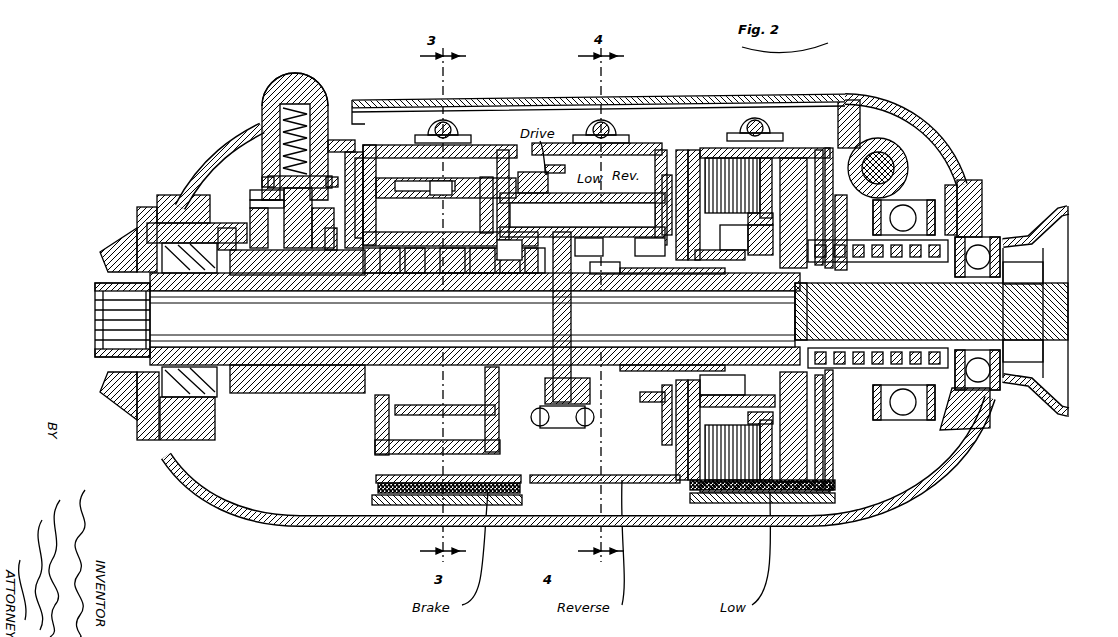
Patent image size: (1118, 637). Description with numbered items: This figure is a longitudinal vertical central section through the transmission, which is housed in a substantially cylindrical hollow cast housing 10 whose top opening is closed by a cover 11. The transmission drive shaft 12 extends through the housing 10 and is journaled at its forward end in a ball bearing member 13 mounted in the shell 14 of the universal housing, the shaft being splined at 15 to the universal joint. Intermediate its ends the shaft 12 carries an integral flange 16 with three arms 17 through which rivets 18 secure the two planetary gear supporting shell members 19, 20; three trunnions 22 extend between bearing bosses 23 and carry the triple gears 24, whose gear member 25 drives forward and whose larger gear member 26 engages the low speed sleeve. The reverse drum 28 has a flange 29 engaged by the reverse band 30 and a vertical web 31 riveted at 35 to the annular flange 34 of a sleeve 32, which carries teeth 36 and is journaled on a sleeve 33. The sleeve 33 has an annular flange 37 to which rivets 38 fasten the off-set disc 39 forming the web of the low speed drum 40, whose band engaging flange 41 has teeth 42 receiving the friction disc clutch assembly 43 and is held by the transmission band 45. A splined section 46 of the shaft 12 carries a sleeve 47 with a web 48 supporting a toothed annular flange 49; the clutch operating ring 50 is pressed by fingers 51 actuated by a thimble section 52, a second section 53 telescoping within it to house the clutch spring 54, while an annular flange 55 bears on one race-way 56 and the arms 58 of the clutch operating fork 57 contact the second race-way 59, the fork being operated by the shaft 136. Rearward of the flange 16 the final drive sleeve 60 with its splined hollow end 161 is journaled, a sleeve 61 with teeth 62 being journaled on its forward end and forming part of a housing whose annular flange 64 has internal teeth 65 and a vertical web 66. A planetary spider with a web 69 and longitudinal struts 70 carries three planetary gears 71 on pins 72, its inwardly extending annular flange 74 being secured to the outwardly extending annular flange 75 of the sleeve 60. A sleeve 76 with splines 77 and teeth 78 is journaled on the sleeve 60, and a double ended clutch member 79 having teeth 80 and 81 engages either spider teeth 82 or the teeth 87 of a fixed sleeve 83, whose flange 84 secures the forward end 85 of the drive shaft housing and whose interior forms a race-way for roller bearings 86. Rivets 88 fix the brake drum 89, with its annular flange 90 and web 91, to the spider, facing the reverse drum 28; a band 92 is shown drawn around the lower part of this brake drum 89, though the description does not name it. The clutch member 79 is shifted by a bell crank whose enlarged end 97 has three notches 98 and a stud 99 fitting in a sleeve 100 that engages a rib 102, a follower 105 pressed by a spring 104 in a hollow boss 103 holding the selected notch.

The transmission housing 10 is at (895, 488).
The cover 11 is at (515, 98).
The transmission drive shaft 12 is at (609, 319).
The ball bearing member 13 is at (995, 238).
The shell 14 is at (1052, 212).
The splines 15 is at (1048, 276).
The flange 16 is at (571, 313).
The arms 17 is at (585, 404).
The rivets 18 is at (588, 426).
The planetary gear supporting shell member 19 is at (509, 250).
The planetary gear supporting shell member 20 is at (622, 414).
The trunnions 22 is at (582, 215).
The bearing bosses 23 is at (504, 185).
The triple gears 24 is at (543, 182).
The gear member 25 is at (557, 164).
The gear member 26 is at (589, 247).
The reverse drum 28 is at (686, 150).
The flange 29 is at (632, 150).
The reverse band 30 is at (630, 143).
The vertical web 31 is at (696, 152).
The sleeve 32 is at (720, 244).
The sleeve 33 is at (628, 291).
The annular flange 34 is at (664, 432).
The rivets 35 is at (660, 404).
The teeth 36 is at (604, 288).
The annular flange 37 is at (760, 237).
The rivets 38 is at (740, 383).
The off-set disc 39 is at (732, 237).
The low speed drum 40 is at (829, 155).
The band engaging flange 41 is at (706, 160).
The teeth 42 is at (770, 170).
The friction disc clutch assembly 43 is at (715, 497).
The transmission band 45 is at (818, 150).
The splined section 46 is at (792, 302).
The sleeve 47 is at (914, 372).
The web 48 is at (763, 410).
The annular flange 49 is at (763, 319).
The clutch operating ring 50 is at (770, 160).
The fingers 51 is at (798, 213).
The thimble section 52 is at (798, 349).
The thimble section 53 is at (928, 244).
The clutch spring 54 is at (917, 242).
The annular flange 55 is at (945, 197).
The race-way 56 is at (903, 206).
The clutch operating fork 57 is at (878, 164).
The arms 58 is at (850, 232).
The race-way 59 is at (886, 210).
The final drive sleeve 60 is at (362, 276).
The sleeve 61 is at (522, 276).
The teeth 62 is at (542, 276).
The annular flange 64 is at (408, 181).
The internal teeth 65 is at (440, 181).
The vertical web 66 is at (486, 184).
The web 69 is at (372, 452).
The longitudinal struts 70 is at (410, 412).
The planetary gears 71 is at (428, 276).
The pins 72 is at (450, 209).
The annular flange 74 is at (462, 276).
The annular flange 75 is at (488, 276).
The sleeve 76 is at (258, 276).
The splines 77 is at (330, 276).
The teeth 78 is at (410, 276).
The double ended clutch member 79 is at (262, 193).
The teeth 80 is at (311, 218).
The teeth 81 is at (260, 226).
The teeth 82 is at (330, 218).
The fixed sleeve 83 is at (190, 205).
The flange 84 is at (148, 207).
The forward end of drive shaft housing 85 is at (128, 398).
The roller bearings 86 is at (203, 422).
The teeth 87 is at (197, 222).
The rivets 88 is at (360, 445).
The brake drum 89 is at (477, 420).
The annular flange 90 is at (369, 196).
The web 91 is at (357, 178).
The brake band 92 is at (410, 500).
The enlarged end 97 is at (322, 165).
The notches 98 is at (272, 172).
The stud 99 is at (337, 181).
The sleeve 100 is at (268, 208).
The rib 102 is at (285, 405).
The hollow boss 103 is at (283, 122).
The spring 104 is at (307, 94).
The follower 105 is at (312, 135).
The shaft 136 is at (884, 164).
The splined hollow end 161 is at (112, 322).